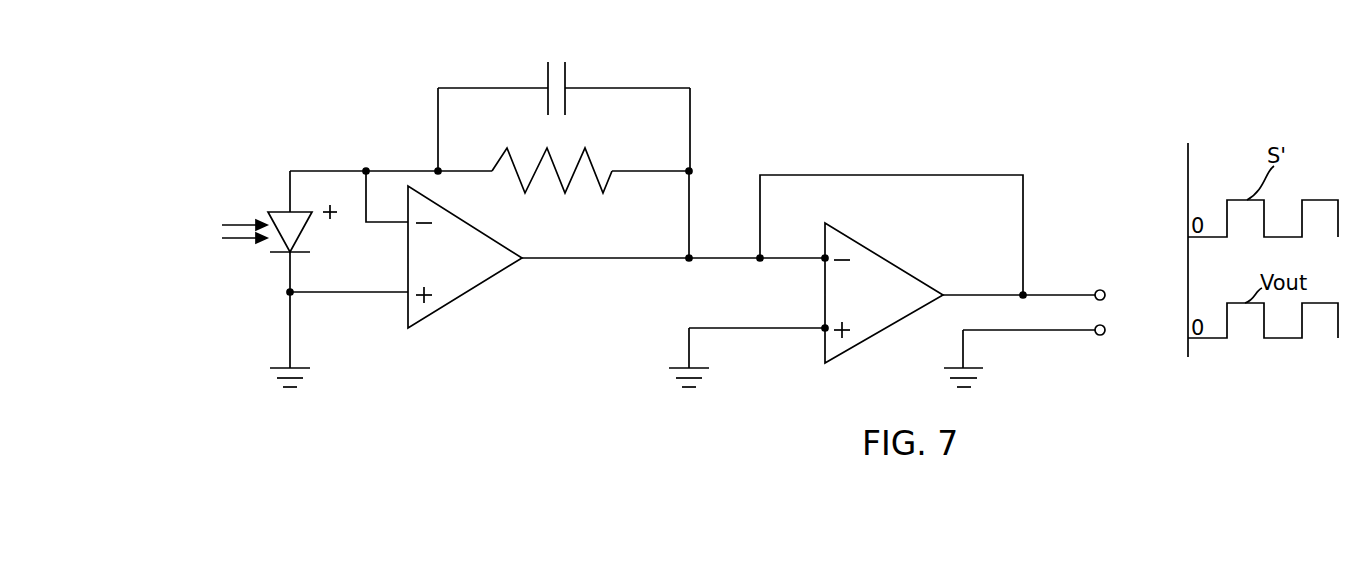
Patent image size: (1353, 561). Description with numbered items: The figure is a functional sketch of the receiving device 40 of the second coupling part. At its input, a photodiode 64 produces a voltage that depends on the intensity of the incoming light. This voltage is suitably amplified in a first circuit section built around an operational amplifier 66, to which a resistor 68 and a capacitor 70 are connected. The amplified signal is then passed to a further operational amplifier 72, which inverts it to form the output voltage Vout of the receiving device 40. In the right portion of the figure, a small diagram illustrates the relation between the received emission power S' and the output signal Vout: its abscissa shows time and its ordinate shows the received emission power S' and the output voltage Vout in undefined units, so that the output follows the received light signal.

The receiving device 40 is at (778, 131).
The photodiode 64 is at (279, 210).
The operational amplifier 66 is at (458, 278).
The resistor 68 is at (592, 158).
The capacitor 70 is at (545, 73).
The further operational amplifier 72 is at (877, 315).